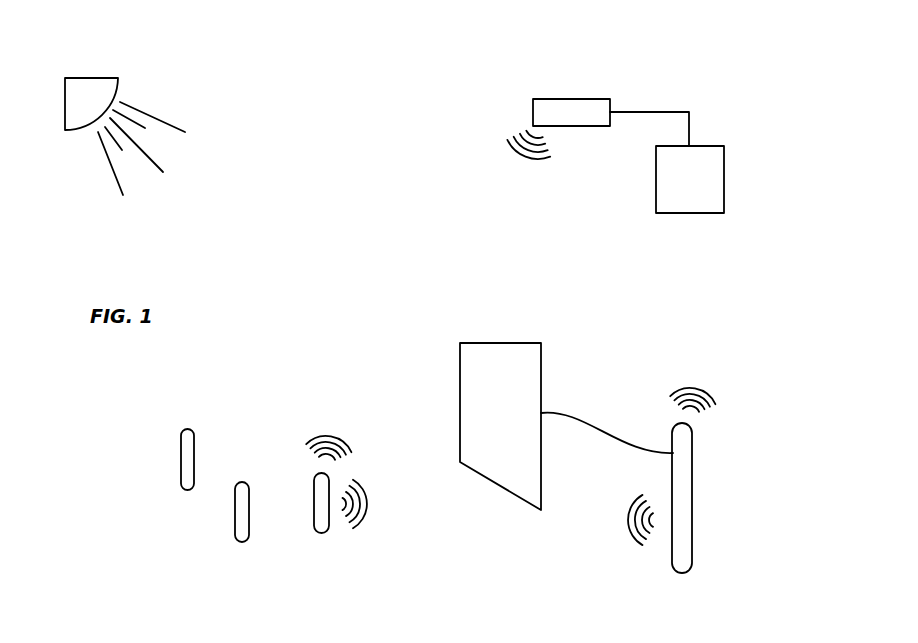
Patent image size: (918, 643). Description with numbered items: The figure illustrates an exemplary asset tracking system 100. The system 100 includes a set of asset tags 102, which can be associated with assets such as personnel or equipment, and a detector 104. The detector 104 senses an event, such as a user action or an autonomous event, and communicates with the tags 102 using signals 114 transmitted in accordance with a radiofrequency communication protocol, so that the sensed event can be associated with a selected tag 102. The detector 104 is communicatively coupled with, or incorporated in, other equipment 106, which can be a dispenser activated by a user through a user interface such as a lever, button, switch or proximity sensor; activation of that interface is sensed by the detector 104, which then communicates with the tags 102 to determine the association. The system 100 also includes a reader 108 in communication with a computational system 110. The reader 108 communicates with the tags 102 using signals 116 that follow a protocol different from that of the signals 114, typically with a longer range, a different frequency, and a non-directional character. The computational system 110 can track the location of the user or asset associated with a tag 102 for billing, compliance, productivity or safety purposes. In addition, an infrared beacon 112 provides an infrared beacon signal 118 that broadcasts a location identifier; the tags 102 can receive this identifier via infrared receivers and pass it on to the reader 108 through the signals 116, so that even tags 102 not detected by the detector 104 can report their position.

The system 100 is at (708, 33).
The asset tag 102 is at (181, 455).
The detector 104 is at (692, 520).
The equipment 106 is at (503, 343).
The reader 108 is at (579, 99).
The computational system 110 is at (724, 180).
The infrared beacon 112 is at (97, 78).
The signals 114 is at (367, 513).
The signals 116 is at (502, 148).
The infrared beacon signal 118 is at (177, 115).